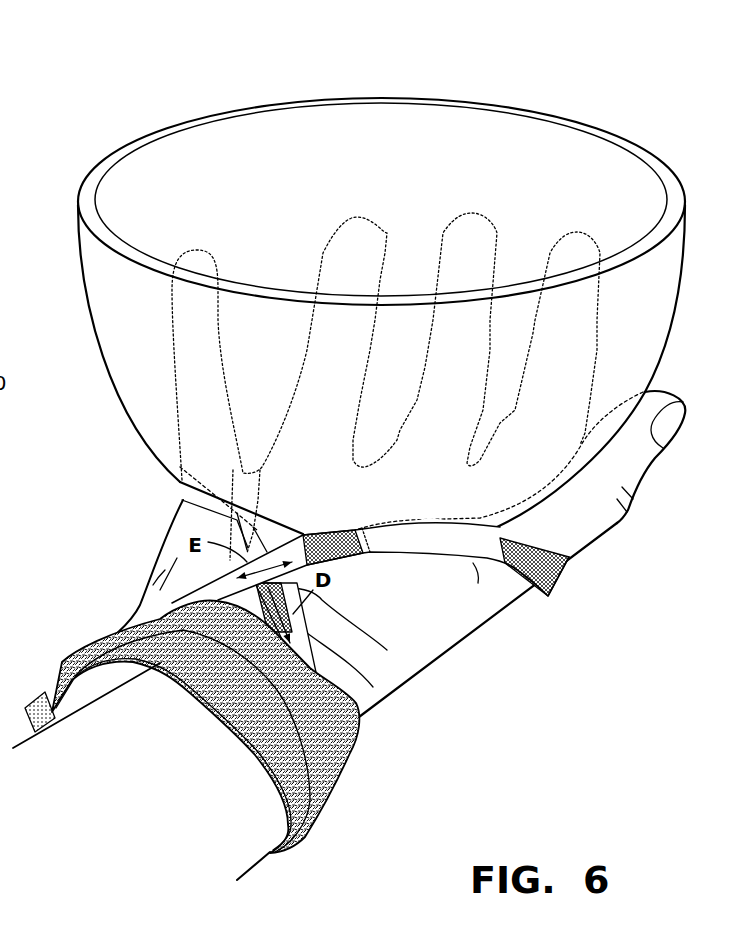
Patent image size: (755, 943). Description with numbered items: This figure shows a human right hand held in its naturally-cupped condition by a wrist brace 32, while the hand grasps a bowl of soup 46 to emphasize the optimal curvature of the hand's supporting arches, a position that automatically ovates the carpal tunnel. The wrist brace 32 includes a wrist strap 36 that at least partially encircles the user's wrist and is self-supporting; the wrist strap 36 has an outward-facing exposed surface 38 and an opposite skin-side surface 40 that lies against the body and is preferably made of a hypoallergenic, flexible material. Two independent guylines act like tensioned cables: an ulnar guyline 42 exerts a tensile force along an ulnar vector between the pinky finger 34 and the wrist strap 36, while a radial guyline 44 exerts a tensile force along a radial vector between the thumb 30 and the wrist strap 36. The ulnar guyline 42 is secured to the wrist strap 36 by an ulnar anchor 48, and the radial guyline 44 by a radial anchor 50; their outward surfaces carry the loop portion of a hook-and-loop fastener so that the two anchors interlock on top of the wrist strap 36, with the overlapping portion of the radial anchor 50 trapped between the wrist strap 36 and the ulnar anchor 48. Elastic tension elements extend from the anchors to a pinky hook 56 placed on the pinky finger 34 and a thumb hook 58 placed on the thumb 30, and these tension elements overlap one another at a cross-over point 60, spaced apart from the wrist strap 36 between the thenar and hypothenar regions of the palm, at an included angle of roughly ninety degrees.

The thumb 30 is at (678, 394).
The wrist brace 32 is at (221, 792).
The pinky finger 34 is at (193, 250).
The wrist strap 36 is at (362, 712).
The exposed surface 38 is at (227, 687).
The skin-side surface 40 is at (77, 682).
The ulnar guyline 42 is at (316, 627).
The radial guyline 44 is at (365, 570).
The bowl of soup 46 is at (497, 103).
The ulnar anchor 48 is at (343, 757).
The radial anchor 50 is at (135, 621).
The pinky hook 56 is at (182, 485).
The thumb hook 58 is at (565, 577).
The cross-over point 60 is at (267, 552).